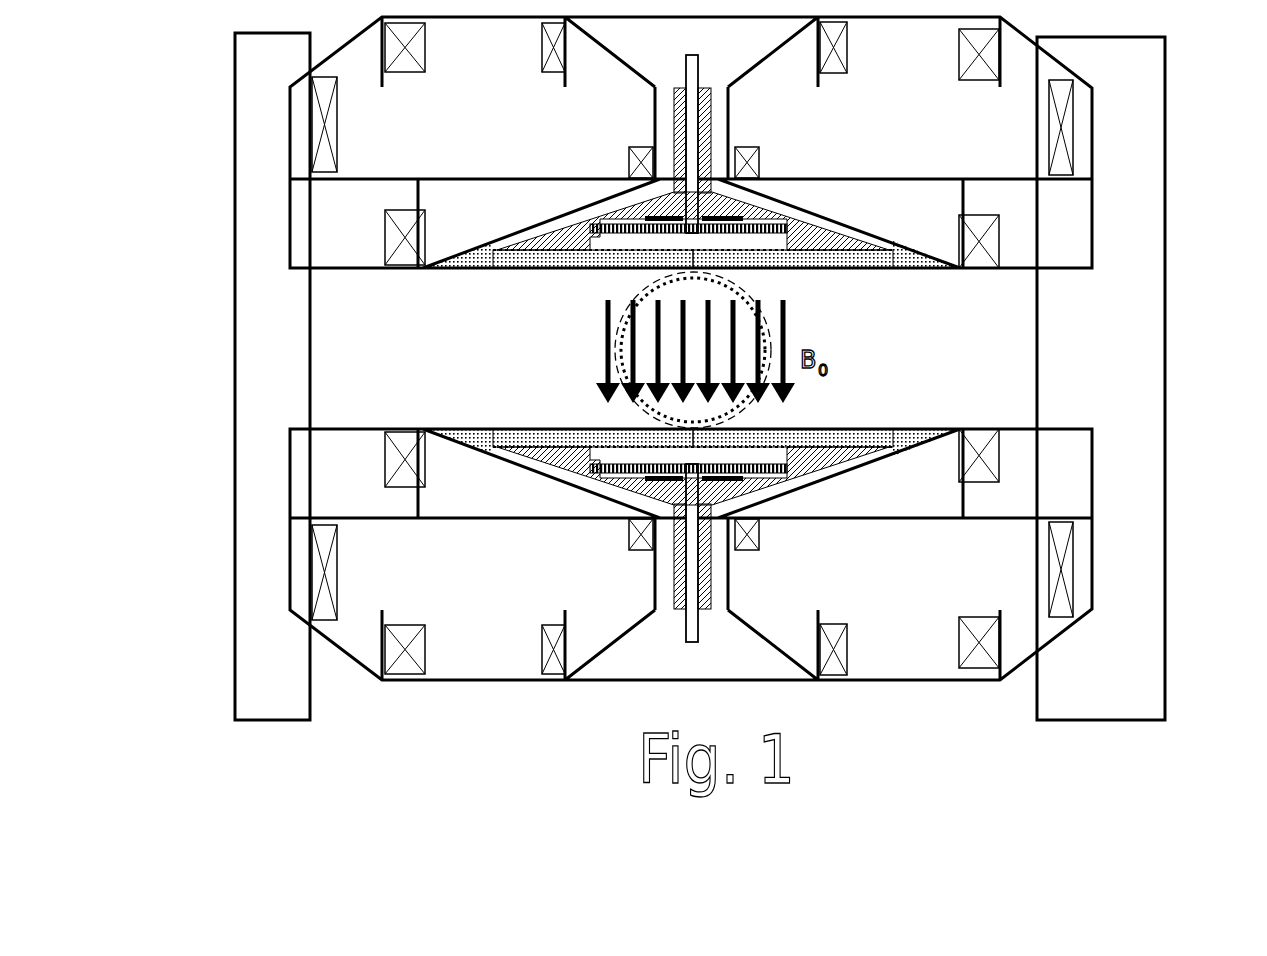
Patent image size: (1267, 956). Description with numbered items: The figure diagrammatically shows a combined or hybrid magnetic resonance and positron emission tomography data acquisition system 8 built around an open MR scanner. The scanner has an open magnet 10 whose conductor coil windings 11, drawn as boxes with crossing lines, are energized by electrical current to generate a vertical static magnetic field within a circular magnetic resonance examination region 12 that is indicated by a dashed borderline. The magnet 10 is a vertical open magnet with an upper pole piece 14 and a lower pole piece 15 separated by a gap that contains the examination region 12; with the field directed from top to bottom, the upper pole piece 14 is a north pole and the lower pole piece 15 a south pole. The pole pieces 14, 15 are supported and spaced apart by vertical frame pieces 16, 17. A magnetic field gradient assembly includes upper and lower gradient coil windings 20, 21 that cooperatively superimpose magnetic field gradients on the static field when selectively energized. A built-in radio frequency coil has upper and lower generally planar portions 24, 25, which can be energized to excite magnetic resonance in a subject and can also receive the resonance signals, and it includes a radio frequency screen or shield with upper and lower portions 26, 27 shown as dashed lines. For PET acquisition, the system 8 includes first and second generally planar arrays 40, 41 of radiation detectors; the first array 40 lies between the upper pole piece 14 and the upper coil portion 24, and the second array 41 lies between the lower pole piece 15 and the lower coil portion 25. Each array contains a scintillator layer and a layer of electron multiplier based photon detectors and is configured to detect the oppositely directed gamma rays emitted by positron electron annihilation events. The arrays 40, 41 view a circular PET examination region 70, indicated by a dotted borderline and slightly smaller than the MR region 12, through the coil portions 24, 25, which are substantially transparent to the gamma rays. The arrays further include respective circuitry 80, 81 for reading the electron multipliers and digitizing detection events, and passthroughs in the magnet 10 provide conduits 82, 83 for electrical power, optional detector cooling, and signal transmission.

The combined magnetic resonance and positron emission tomography data acquisition sy 8 is at (1216, 77).
The open magnet 10 is at (357, 36).
The conductor coil windings 11 is at (403, 220).
The magnetic resonance examination region 12 is at (622, 328).
The upper pole piece 14 is at (262, 163).
The lower pole piece 15 is at (262, 550).
The vertical frame piece 16 is at (235, 336).
The vertical frame piece 17 is at (1170, 340).
The upper gradient coil winding 20 is at (813, 237).
The lower gradient coil winding 21 is at (847, 468).
The upper planar portion of radio frequency coil 24 is at (852, 263).
The lower planar portion of radio frequency coil 25 is at (850, 445).
The upper radio frequency shield portion 26 is at (523, 253).
The lower radio frequency shield portion 27 is at (525, 440).
The first generally planar array of radiation detectors 40 is at (600, 263).
The second generally planar array of radiation detectors 41 is at (585, 434).
The positron emission tomography examination region 70 is at (735, 407).
The circuitry 80 is at (723, 220).
The circuitry 81 is at (740, 480).
The conduit 82 is at (693, 67).
The conduit 83 is at (700, 628).